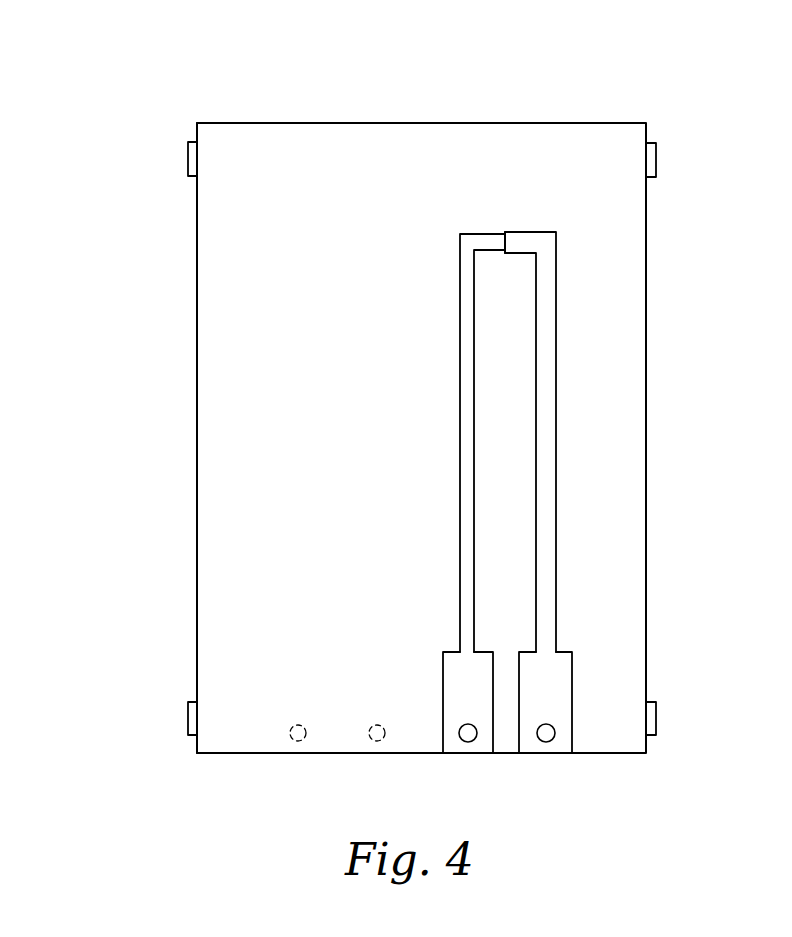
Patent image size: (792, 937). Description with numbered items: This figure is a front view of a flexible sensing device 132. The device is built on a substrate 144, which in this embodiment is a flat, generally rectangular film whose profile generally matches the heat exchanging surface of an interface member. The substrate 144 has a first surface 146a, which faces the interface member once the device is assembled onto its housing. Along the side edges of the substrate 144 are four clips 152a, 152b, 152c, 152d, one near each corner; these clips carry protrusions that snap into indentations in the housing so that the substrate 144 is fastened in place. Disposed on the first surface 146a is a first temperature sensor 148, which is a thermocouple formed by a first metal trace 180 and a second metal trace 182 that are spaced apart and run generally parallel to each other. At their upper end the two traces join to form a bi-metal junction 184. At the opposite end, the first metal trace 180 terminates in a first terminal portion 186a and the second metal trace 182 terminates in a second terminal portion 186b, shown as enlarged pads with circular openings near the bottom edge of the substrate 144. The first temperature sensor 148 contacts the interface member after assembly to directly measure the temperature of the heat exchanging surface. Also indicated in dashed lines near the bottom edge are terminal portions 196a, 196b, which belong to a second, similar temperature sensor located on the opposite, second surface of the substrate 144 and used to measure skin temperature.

The sensing device 132 is at (530, 82).
The substrate 144 is at (647, 574).
The first surface 146a is at (197, 474).
The first temperature sensor 148 is at (536, 224).
The clip 152a is at (656, 722).
The clip 152b is at (656, 160).
The clip 152c is at (188, 720).
The clip 152d is at (188, 160).
The first metal trace 180 is at (556, 385).
The second metal trace 182 is at (460, 443).
The bi-metal junction 184 is at (505, 232).
The first terminal portion 186a is at (550, 743).
The second terminal portion 186b is at (473, 743).
The terminal portion 196a is at (382, 742).
The terminal portion 196b is at (289, 742).